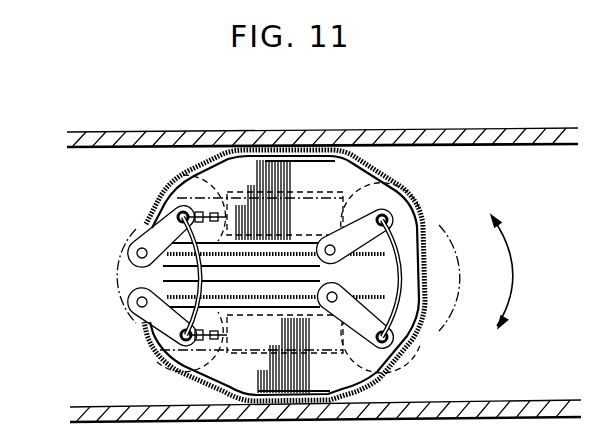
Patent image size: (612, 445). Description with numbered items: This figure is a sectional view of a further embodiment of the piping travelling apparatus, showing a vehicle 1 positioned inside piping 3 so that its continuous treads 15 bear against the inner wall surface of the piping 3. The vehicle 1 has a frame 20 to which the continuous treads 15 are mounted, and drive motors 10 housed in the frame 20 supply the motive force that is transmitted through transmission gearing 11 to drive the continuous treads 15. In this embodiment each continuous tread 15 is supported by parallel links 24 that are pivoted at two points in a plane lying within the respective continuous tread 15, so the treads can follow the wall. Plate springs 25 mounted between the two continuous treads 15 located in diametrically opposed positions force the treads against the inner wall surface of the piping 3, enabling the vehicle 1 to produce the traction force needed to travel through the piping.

The vehicle 1 is at (100, 272).
The piping 3 is at (122, 140).
The drive motor 10 is at (283, 215).
The transmission gearing 11 is at (210, 213).
The continuous tread 15 is at (147, 202).
The frame 20 is at (436, 265).
The parallel link 24 is at (174, 215).
The plate spring 25 is at (400, 290).